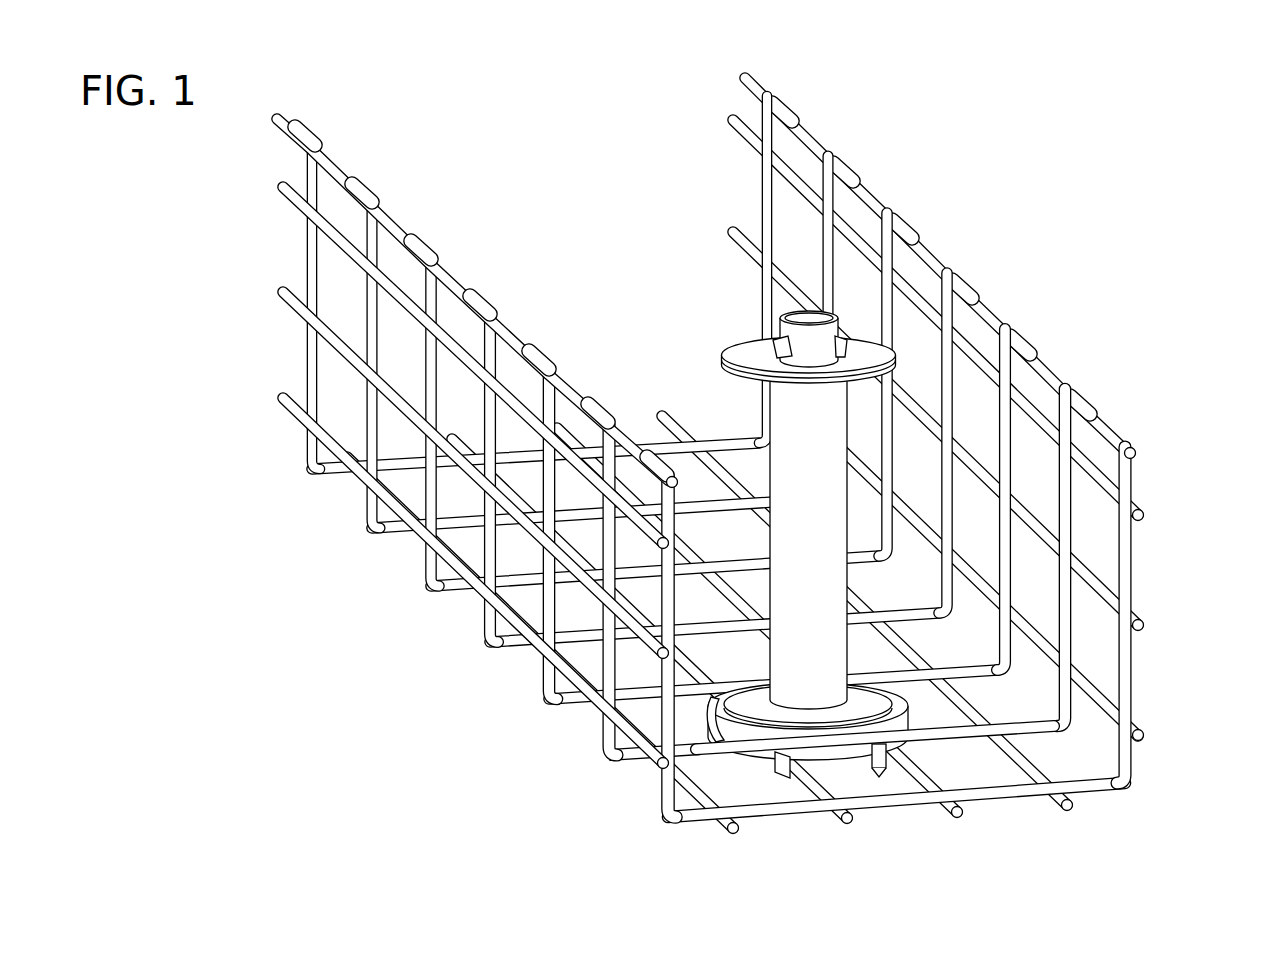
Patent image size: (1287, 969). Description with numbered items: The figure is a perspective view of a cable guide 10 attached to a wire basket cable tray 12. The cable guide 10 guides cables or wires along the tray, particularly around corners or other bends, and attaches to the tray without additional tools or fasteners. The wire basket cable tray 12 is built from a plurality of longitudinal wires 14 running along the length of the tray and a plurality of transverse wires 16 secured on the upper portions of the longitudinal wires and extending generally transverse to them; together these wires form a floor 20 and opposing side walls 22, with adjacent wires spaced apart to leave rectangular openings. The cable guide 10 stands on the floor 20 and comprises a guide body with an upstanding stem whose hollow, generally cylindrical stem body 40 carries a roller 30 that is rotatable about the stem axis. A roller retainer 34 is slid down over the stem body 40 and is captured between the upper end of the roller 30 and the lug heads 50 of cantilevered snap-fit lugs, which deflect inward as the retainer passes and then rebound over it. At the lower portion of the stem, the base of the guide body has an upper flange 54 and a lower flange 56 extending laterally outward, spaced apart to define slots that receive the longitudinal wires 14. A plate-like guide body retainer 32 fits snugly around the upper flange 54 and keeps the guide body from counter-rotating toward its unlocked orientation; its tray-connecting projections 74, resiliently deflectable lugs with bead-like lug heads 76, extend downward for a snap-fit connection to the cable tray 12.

The cable guide 10 is at (830, 562).
The wire basket cable tray 12 is at (765, 486).
The longitudinal wires 14 is at (1145, 625).
The transverse wires 16 is at (688, 572).
The floor 20 is at (718, 655).
The side walls 22 is at (544, 640).
The roller 30 is at (797, 533).
The guide body retainer 32 is at (918, 710).
The roller retainer 34 is at (742, 354).
The stem body 40 is at (810, 340).
The lug heads 50 is at (777, 340).
The upper flange 54 is at (730, 690).
The lower flange 56 is at (822, 767).
The tray-connecting projections 74 is at (871, 768).
The lug heads 76 is at (888, 762).